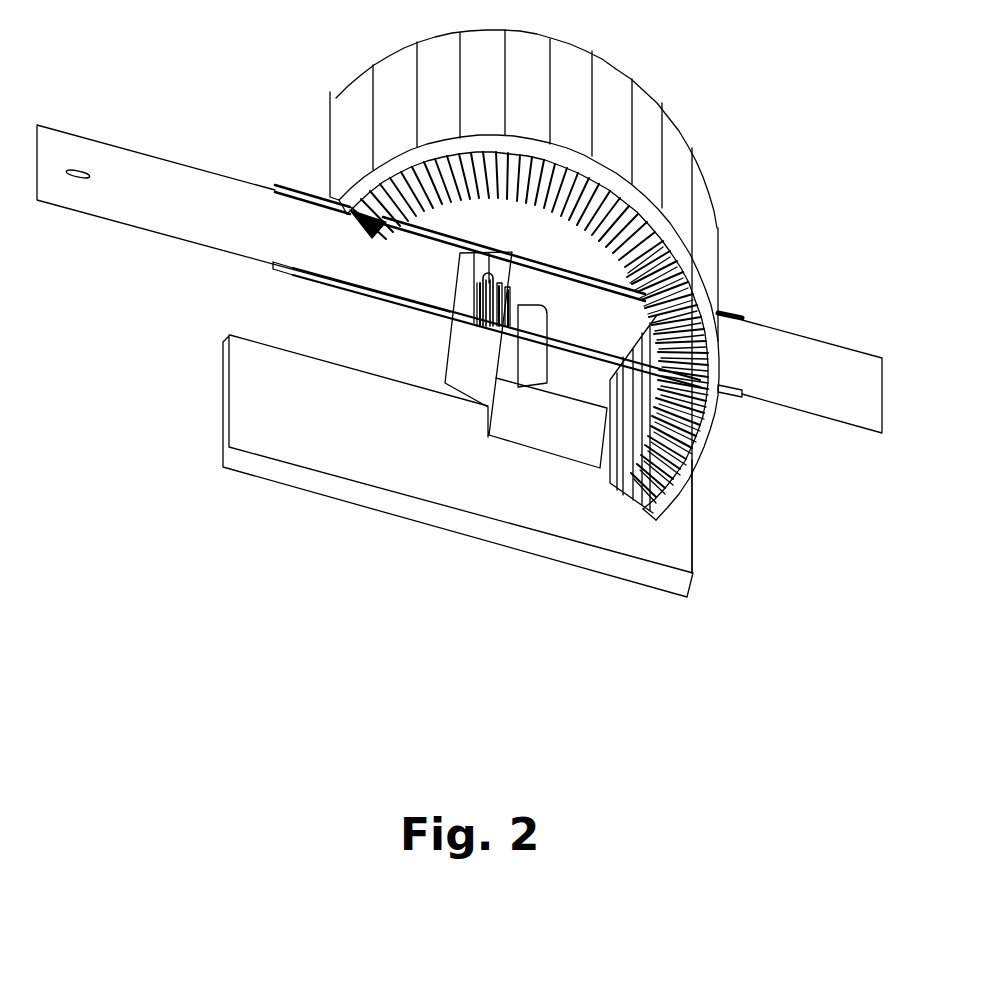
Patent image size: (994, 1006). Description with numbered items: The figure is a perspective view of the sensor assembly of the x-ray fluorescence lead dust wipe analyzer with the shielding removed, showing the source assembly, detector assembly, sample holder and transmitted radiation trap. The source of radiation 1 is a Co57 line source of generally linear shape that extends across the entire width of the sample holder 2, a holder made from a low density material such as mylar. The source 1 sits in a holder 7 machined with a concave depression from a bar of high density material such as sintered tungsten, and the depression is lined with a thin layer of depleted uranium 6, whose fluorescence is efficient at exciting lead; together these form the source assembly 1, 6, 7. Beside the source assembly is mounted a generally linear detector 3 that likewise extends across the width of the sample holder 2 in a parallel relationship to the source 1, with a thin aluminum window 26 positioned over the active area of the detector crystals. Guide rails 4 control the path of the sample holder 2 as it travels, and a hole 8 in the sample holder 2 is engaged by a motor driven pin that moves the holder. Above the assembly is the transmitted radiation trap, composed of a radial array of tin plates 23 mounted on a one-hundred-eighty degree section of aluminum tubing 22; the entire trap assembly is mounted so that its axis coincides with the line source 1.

The source of radiation 1 is at (480, 302).
The sample holder 2 is at (775, 352).
The detector 3 is at (595, 420).
The guide rails 4 is at (292, 272).
The depleted uranium layer 6 is at (478, 293).
The source holder 7 is at (472, 370).
The hole 8 is at (73, 167).
The aluminum tubing section 22 is at (697, 220).
The tin plates 23 is at (620, 220).
The aluminum window 26 is at (537, 372).